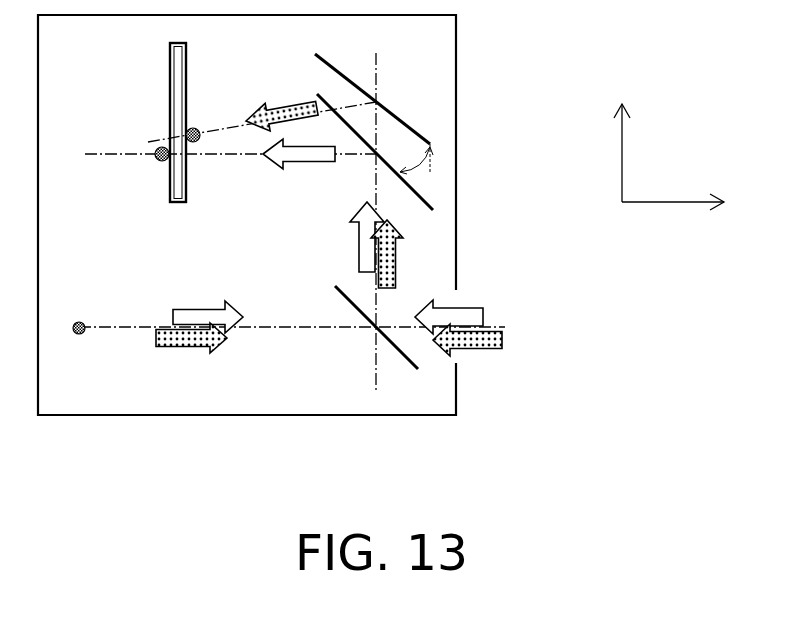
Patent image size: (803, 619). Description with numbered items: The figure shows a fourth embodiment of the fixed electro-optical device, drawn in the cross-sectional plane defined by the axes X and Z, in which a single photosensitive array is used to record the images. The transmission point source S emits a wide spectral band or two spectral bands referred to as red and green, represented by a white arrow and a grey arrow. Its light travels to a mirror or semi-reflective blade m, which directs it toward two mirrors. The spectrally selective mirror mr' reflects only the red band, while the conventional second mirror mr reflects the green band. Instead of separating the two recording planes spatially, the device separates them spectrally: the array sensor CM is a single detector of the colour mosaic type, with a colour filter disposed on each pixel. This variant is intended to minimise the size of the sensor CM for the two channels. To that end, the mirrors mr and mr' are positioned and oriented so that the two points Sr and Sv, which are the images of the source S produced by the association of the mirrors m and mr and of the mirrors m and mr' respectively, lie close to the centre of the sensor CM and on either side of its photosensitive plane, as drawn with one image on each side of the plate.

The array sensor CM is at (168, 59).
The image of the point source Sv is at (196, 129).
The image of the point source Sr is at (162, 161).
The second mirror mr is at (379, 99).
The spectrally selective mirror mr' is at (375, 152).
The semi-reflective blade m is at (375, 328).
The transmission point source S is at (81, 335).
The Z axis Z is at (622, 141).
The X axis X is at (682, 201).